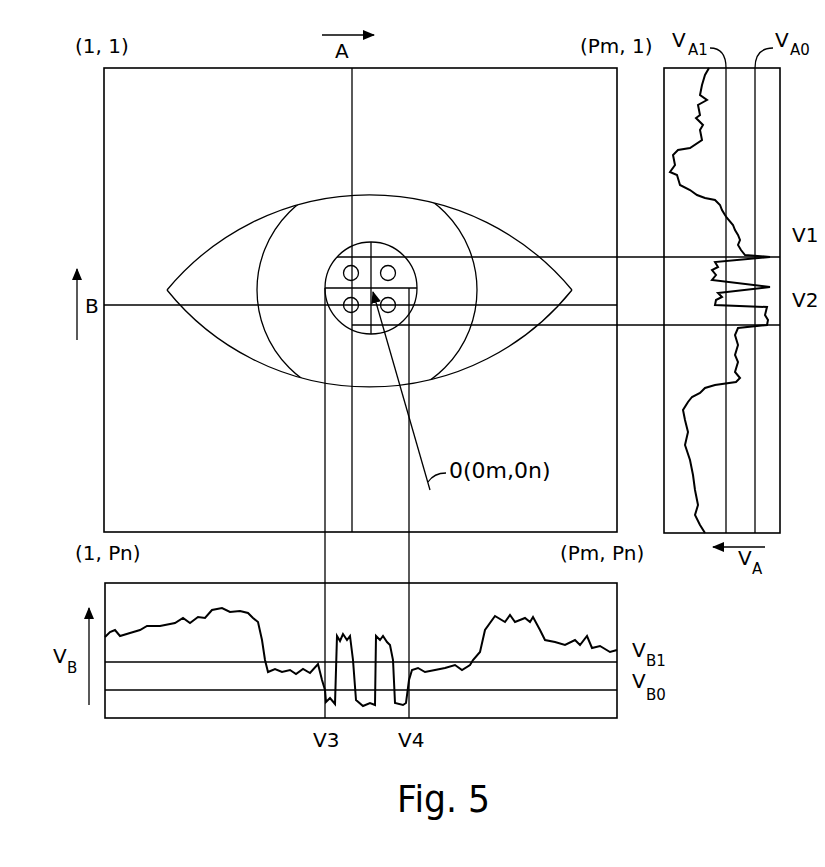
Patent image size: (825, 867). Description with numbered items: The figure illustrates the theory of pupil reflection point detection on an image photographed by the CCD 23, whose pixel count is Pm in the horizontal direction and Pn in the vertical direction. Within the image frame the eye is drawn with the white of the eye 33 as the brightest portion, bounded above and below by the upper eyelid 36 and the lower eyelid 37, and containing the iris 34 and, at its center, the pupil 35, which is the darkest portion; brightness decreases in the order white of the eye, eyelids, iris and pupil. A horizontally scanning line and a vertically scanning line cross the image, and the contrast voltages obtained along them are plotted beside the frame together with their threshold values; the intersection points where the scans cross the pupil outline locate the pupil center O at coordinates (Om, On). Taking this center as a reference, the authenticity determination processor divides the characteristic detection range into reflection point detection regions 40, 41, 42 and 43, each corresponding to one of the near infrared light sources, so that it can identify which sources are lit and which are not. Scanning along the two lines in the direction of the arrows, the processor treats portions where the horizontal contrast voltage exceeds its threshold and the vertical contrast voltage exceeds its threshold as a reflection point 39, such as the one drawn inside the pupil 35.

The CCD 23 is at (463, 89).
The white of the eye 33 is at (363, 290).
The iris 34 is at (296, 231).
The pupil 35 is at (398, 283).
The upper eyelid 36 is at (497, 226).
The lower eyelid 37 is at (496, 356).
The reflection point 39 is at (354, 259).
The reflection point detection region 40 is at (336, 281).
The reflection point detection region 41 is at (376, 264).
The reflection point detection region 42 is at (356, 318).
The reflection point detection region 43 is at (399, 316).